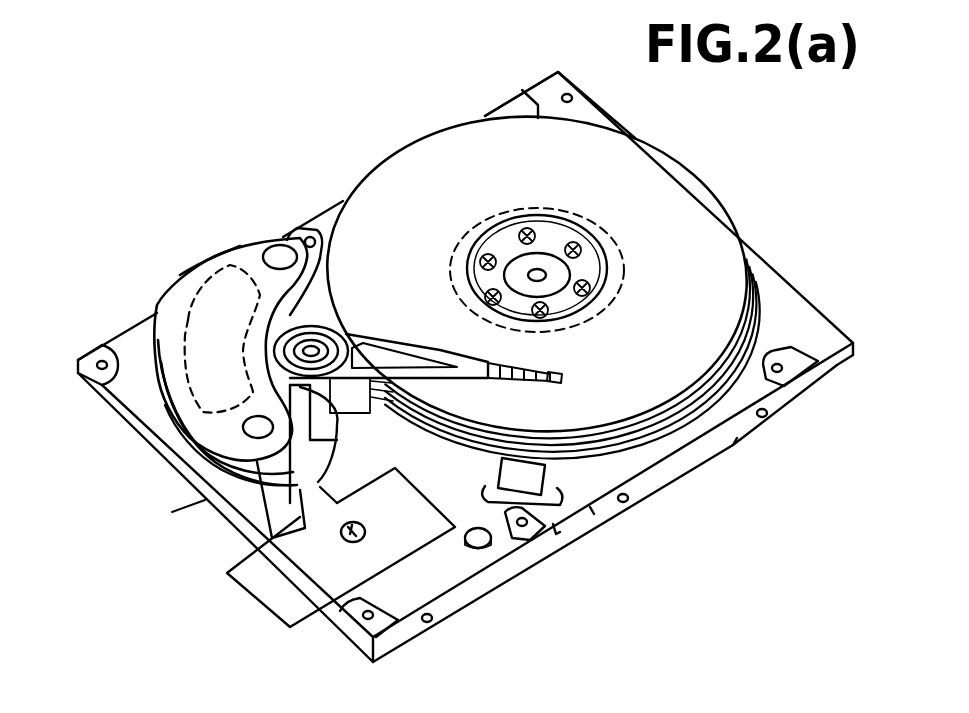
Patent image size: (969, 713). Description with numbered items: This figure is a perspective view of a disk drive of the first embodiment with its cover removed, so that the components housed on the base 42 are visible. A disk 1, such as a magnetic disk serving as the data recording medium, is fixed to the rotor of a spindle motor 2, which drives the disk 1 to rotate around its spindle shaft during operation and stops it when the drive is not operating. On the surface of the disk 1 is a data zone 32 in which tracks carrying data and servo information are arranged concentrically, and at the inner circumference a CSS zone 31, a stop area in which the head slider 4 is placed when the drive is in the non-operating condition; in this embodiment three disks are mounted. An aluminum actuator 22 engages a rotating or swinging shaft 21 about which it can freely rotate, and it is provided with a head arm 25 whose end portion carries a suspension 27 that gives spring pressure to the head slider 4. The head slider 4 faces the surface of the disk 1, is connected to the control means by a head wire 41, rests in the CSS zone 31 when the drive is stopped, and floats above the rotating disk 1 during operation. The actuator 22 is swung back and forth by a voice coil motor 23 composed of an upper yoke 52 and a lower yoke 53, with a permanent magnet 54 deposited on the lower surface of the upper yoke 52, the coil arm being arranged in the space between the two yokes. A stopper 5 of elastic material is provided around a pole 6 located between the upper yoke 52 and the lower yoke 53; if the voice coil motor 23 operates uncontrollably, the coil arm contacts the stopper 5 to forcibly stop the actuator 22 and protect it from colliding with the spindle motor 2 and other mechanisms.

The disk 1 is at (660, 157).
The spindle motor 2 is at (540, 232).
The CSS zone 31 is at (612, 237).
The data zone 32 is at (710, 224).
The base 42 is at (800, 304).
The head wire 41 is at (338, 457).
The actuator 22 is at (365, 332).
The head arm 25 is at (402, 340).
The suspension 27 is at (515, 384).
The head slider 4 is at (563, 376).
The voice coil motor 23 is at (160, 290).
The permanent magnet 54 is at (205, 245).
The upper yoke 52 is at (253, 240).
The rotating or swinging shaft 21 is at (262, 347).
The lower yoke 53 is at (170, 430).
The stopper 5 is at (217, 510).
The pole 6 is at (172, 512).